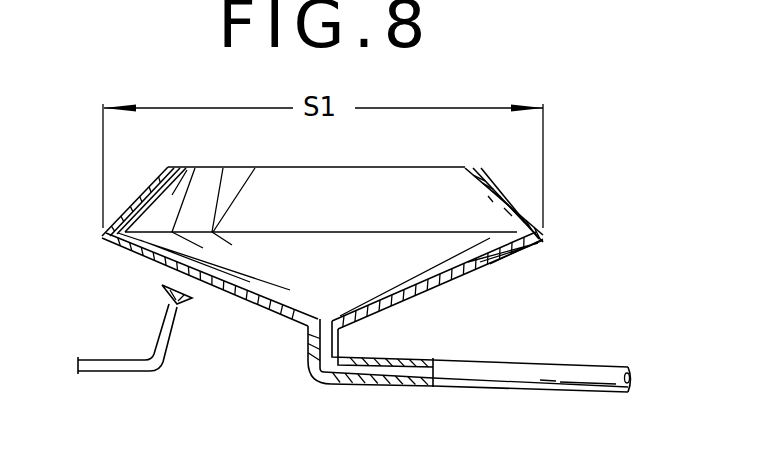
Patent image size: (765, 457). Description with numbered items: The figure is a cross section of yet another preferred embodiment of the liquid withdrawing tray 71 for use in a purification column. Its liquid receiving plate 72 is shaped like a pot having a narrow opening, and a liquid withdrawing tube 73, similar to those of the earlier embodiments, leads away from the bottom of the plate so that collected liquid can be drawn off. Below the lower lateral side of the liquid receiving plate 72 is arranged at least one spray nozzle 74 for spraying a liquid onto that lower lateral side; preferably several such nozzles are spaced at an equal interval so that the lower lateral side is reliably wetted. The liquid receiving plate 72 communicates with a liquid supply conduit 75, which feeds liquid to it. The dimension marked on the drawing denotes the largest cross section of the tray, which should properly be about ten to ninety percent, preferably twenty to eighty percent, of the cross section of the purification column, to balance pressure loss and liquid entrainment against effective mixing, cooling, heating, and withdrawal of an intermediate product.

The liquid withdrawing tray 71 is at (552, 207).
The liquid receiving plate 72 is at (484, 258).
The liquid withdrawing tube 73 is at (592, 380).
The spray nozzle 74 is at (182, 302).
The liquid supply conduit 75 is at (90, 358).